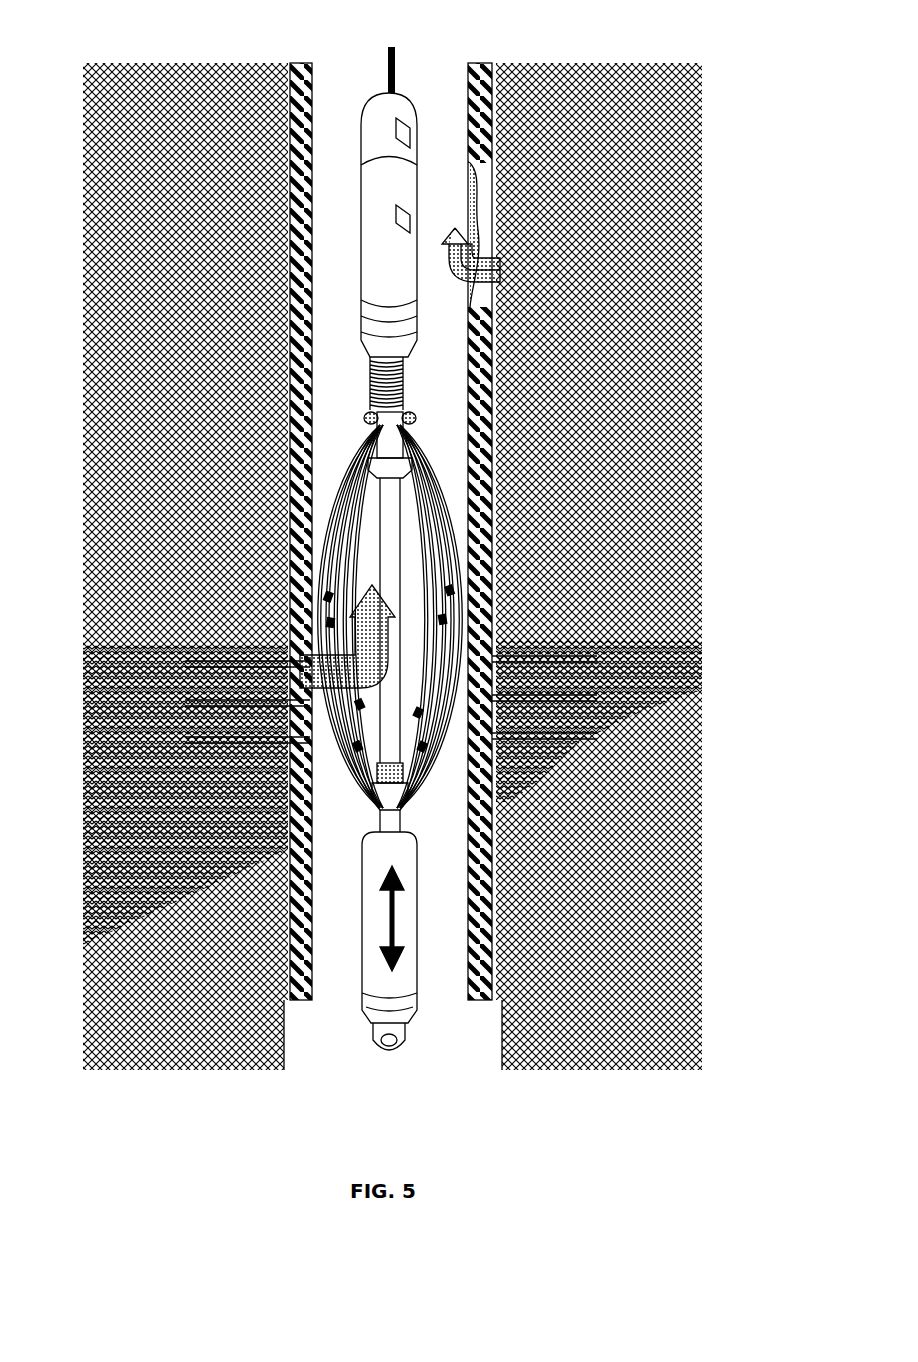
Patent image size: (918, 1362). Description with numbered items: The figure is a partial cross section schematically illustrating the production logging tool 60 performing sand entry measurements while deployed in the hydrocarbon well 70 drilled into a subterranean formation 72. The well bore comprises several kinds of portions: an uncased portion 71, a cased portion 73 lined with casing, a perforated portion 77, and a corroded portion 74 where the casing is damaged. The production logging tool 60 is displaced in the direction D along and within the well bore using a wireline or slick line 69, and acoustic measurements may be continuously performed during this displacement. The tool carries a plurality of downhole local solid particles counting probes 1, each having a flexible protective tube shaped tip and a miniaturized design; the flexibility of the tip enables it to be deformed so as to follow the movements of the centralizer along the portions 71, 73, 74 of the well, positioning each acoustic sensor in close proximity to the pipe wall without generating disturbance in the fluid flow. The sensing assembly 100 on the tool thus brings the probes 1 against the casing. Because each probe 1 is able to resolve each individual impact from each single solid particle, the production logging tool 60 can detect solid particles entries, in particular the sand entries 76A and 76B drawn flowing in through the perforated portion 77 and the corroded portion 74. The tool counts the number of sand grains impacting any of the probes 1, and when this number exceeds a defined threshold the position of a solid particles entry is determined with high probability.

The downhole local solid particles counting probe 1 is at (350, 613).
The production logging tool 60 is at (347, 243).
The wireline or slick line 69 is at (378, 88).
The hydrocarbon well 70 is at (335, 1082).
The uncased portion 71 is at (503, 1042).
The subterranean formation 72 is at (200, 294).
The cased portion 73 is at (468, 993).
The corroded portion 74 is at (468, 212).
The sand entry 76A is at (357, 637).
The sand entry 76B is at (462, 256).
The perforated portion 77 is at (292, 744).
The sensor assembly 100 is at (362, 396).
The displacement direction D is at (396, 926).